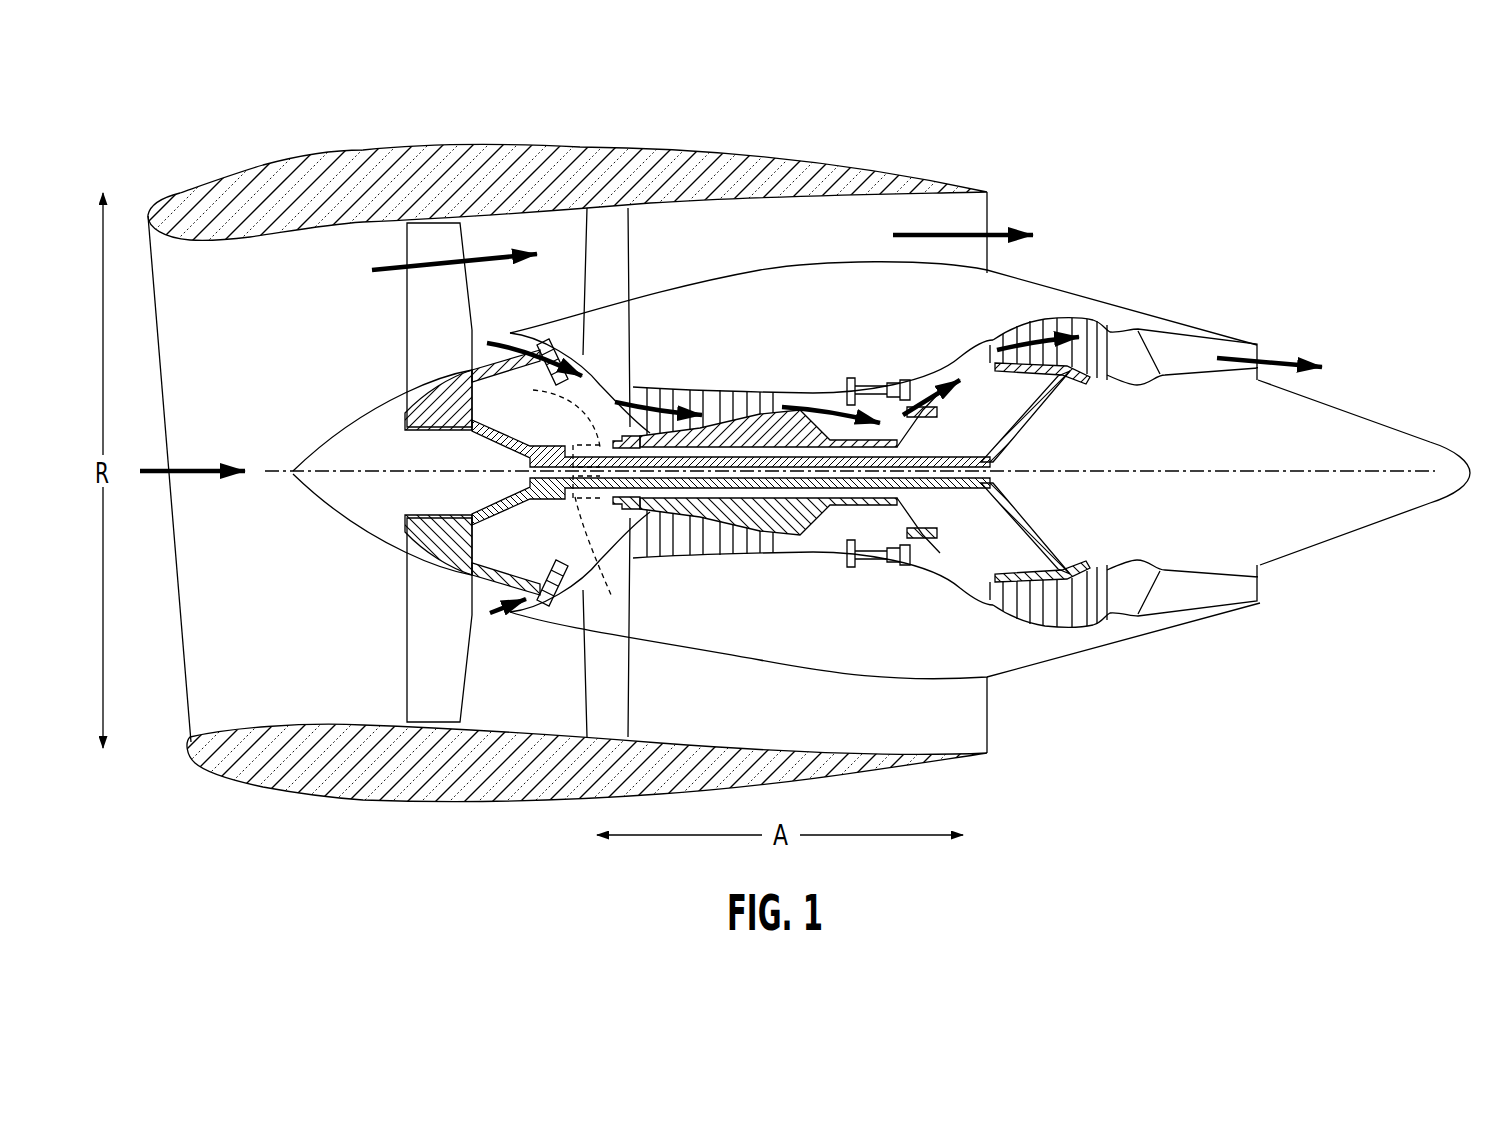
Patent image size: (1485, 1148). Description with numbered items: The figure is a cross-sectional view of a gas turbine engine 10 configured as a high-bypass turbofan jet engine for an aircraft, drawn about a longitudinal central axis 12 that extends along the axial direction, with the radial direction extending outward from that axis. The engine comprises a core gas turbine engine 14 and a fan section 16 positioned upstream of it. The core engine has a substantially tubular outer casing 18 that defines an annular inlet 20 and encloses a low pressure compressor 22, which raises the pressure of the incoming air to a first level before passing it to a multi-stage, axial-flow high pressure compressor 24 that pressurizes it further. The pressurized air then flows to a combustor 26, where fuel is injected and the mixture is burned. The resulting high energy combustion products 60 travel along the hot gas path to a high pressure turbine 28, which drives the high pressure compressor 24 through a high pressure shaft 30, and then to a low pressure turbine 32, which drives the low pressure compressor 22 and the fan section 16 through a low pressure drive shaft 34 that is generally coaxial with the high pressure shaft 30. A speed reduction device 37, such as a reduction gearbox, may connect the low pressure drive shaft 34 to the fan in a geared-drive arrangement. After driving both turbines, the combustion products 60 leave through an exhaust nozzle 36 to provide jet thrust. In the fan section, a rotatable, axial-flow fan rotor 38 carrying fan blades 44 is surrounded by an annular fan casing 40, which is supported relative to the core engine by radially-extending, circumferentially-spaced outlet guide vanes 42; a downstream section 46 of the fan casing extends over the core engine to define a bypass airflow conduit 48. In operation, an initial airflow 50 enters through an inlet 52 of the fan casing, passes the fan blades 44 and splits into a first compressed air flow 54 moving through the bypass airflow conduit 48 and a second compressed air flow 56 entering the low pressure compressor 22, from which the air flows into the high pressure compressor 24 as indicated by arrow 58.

The gas turbine engine 10 is at (1165, 178).
The central axis 12 is at (1198, 470).
The core gas turbine engine 14 is at (817, 350).
The fan section 16 is at (455, 127).
The outer casing 18 is at (822, 668).
The annular inlet 20 is at (521, 602).
The low pressure compressor 22 is at (585, 553).
The high pressure compressor 24 is at (667, 543).
The combustor 26 is at (873, 553).
The high pressure turbine 28 is at (930, 553).
The high pressure shaft 30 is at (923, 417).
The low pressure turbine 32 is at (1090, 627).
The low pressure drive shaft 34 is at (593, 446).
The exhaust nozzle 36 is at (1260, 352).
The speed reduction device 37 is at (566, 500).
The fan rotor 38 is at (470, 428).
The annular fan casing 40 is at (450, 802).
The outlet guide vanes 42 is at (630, 258).
The fan blades 44 is at (405, 653).
The downstream section 46 is at (878, 170).
The bypass airflow conduit 48 is at (786, 250).
The initial airflow 50 is at (183, 460).
The inlet 52 is at (190, 745).
The first compressed air flow 54 is at (418, 258).
The second compressed air flow 56 is at (501, 338).
The air flow entering HP compressor 58 is at (655, 393).
The high energy combustion products 60 is at (927, 375).